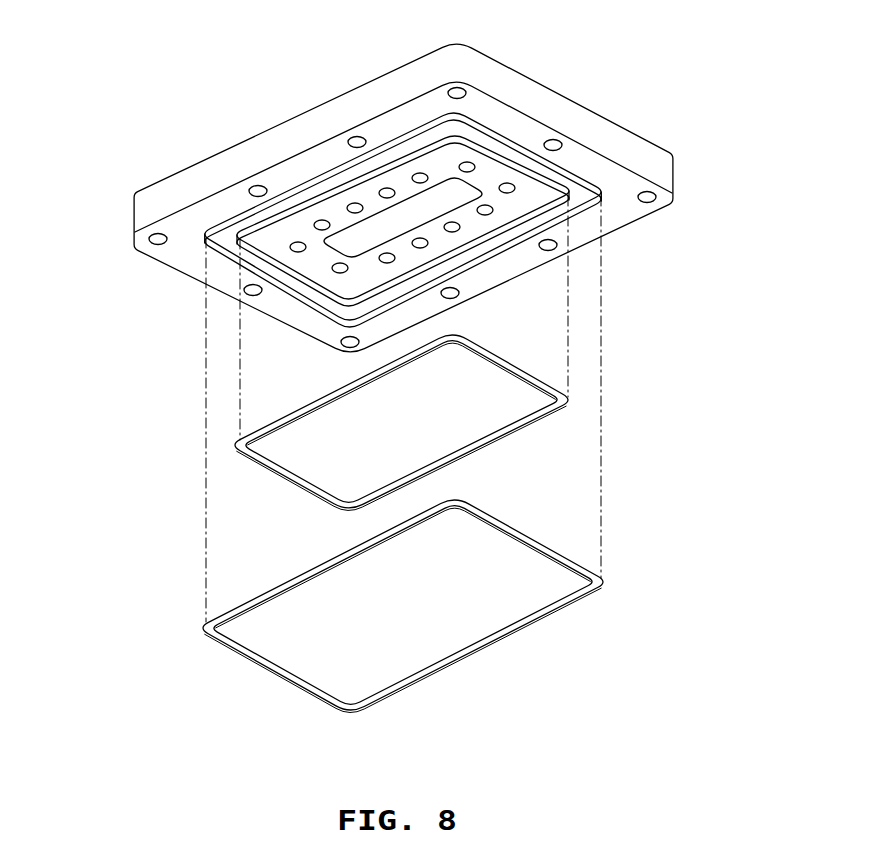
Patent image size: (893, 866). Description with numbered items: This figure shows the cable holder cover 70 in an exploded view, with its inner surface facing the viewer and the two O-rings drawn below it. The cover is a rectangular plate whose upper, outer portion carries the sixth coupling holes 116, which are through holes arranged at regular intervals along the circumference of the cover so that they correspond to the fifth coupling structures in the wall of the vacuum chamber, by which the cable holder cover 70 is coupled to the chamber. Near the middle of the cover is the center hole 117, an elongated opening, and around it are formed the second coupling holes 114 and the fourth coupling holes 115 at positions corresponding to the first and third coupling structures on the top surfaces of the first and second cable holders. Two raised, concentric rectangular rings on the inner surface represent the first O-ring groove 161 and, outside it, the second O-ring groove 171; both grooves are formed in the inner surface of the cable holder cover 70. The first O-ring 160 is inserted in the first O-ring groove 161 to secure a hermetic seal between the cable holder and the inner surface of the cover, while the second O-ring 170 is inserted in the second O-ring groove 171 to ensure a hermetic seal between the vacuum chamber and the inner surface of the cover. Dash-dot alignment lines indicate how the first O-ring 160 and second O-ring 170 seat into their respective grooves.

The cable holder cover 70 is at (580, 97).
The second coupling holes 114 is at (307, 227).
The fourth coupling holes 115 is at (462, 229).
The sixth coupling holes 116 is at (350, 143).
The center hole 117 is at (453, 192).
The first O-ring 160 is at (527, 362).
The first O-ring groove 161 is at (303, 282).
The second O-ring 170 is at (541, 528).
The second O-ring groove 171 is at (229, 255).